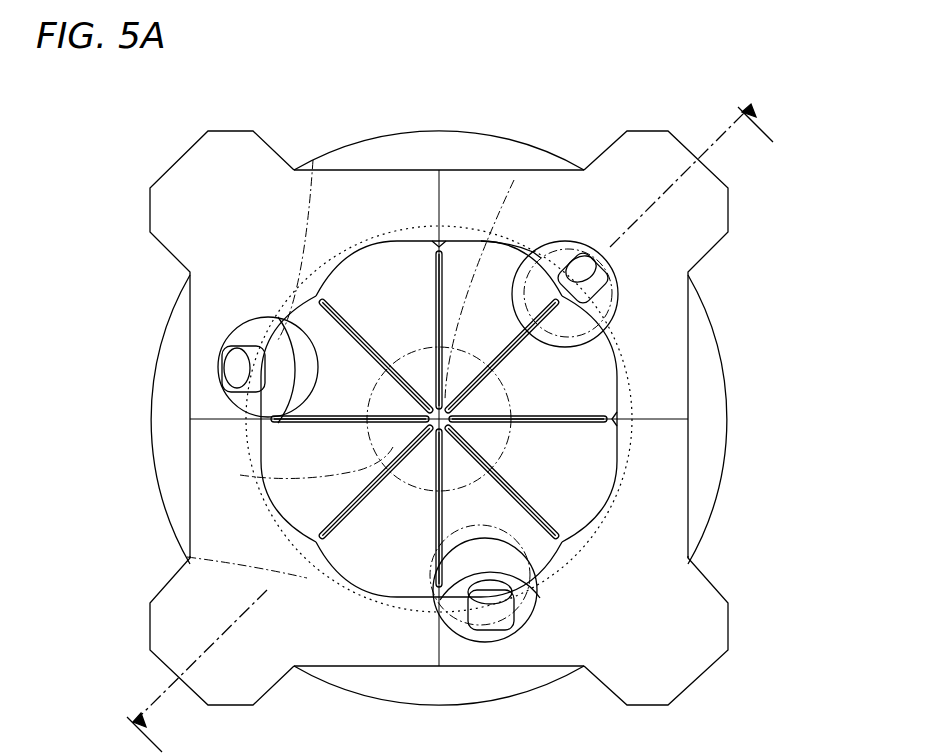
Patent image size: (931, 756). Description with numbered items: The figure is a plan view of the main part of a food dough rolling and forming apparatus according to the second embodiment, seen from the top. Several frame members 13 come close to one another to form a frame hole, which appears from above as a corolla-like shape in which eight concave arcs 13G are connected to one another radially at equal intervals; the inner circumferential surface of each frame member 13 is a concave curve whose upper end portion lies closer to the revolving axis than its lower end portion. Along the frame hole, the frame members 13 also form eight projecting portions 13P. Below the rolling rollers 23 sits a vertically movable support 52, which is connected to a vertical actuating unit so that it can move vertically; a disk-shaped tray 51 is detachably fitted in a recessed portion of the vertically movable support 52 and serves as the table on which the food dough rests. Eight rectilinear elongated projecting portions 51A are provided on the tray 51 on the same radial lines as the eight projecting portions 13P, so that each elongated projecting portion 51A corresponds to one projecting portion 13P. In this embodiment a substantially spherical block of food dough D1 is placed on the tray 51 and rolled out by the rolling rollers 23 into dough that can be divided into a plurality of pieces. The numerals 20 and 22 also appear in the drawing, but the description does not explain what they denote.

The outer member 13 is at (215, 178).
The groove of outer member 13G is at (603, 492).
The projection of outer member 13P is at (562, 542).
The roller 23 is at (310, 157).
The retainer body 51 is at (573, 453).
The inner surface of retainer 51A is at (583, 418).
The ring 52 is at (378, 160).
The pitch circle diameter D1 is at (240, 475).
The shaft 20 is at (396, 752).
The inner member 22 is at (480, 752).